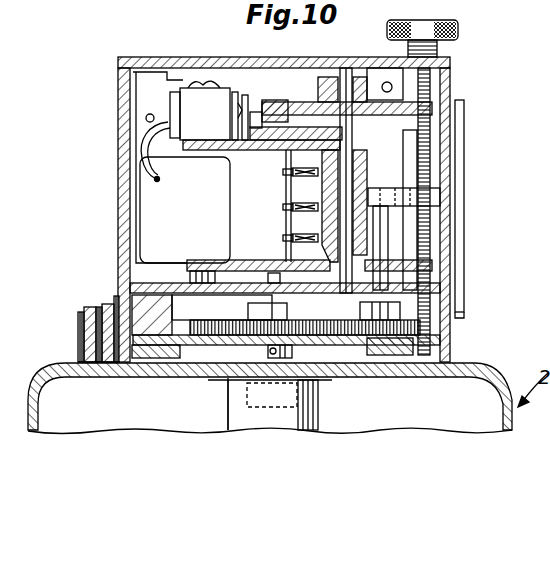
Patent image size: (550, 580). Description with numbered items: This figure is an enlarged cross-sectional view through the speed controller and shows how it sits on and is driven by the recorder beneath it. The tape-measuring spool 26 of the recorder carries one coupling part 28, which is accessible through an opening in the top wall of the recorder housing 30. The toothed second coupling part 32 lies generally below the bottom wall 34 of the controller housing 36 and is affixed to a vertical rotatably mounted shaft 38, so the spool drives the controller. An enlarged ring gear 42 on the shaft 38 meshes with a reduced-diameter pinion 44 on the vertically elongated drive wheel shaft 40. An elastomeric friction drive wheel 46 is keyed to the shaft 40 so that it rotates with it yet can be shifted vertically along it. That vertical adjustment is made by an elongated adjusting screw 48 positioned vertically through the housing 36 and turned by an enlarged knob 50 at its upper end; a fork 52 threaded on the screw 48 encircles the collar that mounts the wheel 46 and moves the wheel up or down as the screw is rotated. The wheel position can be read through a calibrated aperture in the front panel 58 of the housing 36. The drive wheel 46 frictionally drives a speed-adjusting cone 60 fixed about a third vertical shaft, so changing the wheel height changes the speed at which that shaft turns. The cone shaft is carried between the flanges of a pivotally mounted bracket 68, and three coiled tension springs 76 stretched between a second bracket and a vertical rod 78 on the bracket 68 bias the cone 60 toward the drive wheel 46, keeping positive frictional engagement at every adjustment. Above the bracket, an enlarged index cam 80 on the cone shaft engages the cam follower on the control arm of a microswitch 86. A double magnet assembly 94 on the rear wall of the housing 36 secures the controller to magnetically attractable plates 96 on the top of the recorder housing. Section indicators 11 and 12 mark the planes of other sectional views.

The section line 11- 11 is at (420, 15).
The section line 12- 12 is at (110, 179).
The tape-measuring spool 26 is at (230, 421).
The coupling part 28 is at (318, 408).
The recorder housing 30 is at (478, 365).
The second coupling part 32 is at (222, 394).
The bottom wall 34 is at (148, 378).
The controller housing 36 is at (111, 244).
The shaft 38 is at (275, 300).
The drive wheel shaft 40 is at (378, 263).
The ring gear 42 is at (236, 318).
The pinion 44 is at (393, 325).
The friction drive wheel 46 is at (427, 163).
The adjusting screw 48 is at (428, 245).
The knob 50 is at (458, 27).
The fork 52 is at (433, 200).
The front panel 58 is at (443, 93).
The speed-adjusting cone 60 is at (292, 165).
The bracket 68 is at (133, 201).
The coiled tension springs 76 is at (292, 187).
The vertical rod 78 is at (290, 222).
The index cam 80 is at (268, 103).
The microswitch 86 is at (217, 97).
The double magnet assembly 94 is at (78, 322).
The magnetically attractable plates 96 is at (76, 379).